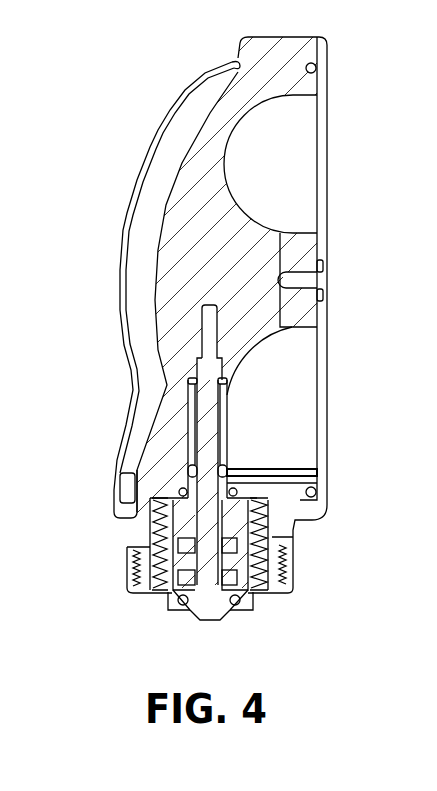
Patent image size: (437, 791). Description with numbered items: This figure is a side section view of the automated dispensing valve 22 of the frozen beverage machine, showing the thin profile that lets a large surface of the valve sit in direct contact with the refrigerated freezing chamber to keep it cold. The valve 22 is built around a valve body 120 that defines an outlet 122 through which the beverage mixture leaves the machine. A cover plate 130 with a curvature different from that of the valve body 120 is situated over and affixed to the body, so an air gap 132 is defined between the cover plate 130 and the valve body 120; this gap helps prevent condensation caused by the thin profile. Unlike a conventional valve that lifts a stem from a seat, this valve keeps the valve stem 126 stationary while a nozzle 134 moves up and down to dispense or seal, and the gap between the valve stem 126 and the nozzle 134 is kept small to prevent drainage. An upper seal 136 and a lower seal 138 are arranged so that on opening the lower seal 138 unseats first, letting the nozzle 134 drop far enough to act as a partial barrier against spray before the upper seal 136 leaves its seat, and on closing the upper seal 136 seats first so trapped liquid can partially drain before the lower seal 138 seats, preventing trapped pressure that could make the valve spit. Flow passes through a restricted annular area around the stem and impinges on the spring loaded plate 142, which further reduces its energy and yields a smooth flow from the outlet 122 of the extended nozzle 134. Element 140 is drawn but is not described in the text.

The dispensing valve 22 is at (136, 288).
The valve body 120 is at (140, 508).
The outlet 122 is at (185, 608).
The valve stem 126 is at (222, 443).
The cover plate 130 is at (123, 243).
The air gap 132 is at (138, 300).
The nozzle 134 is at (163, 597).
The upper seal 136 is at (190, 470).
The lower seal 138 is at (237, 603).
The retainer 140 is at (235, 535).
The spring loaded plate 142 is at (272, 562).